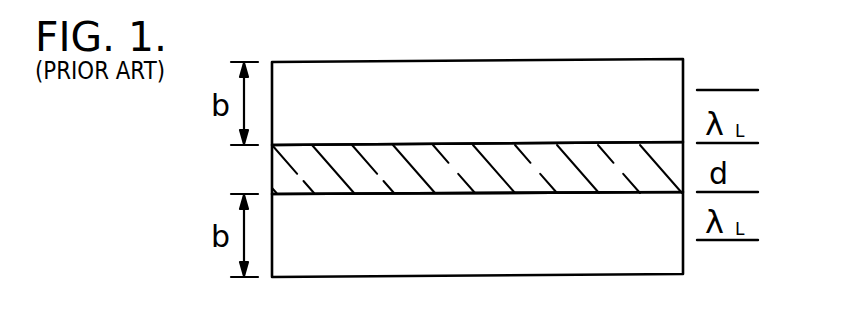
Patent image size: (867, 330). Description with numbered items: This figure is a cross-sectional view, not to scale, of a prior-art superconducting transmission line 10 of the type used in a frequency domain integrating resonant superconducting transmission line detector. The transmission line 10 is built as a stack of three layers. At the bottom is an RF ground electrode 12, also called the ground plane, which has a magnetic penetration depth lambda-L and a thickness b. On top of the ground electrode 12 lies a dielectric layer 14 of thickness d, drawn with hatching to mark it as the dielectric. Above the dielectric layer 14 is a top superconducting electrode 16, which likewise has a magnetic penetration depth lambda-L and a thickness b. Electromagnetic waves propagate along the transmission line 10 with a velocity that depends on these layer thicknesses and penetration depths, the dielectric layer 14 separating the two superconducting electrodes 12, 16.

The superconducting transmission line 10 is at (670, 29).
The RF ground electrode 12 is at (317, 278).
The dielectric layer 14 is at (272, 173).
The top superconducting electrode 16 is at (345, 61).